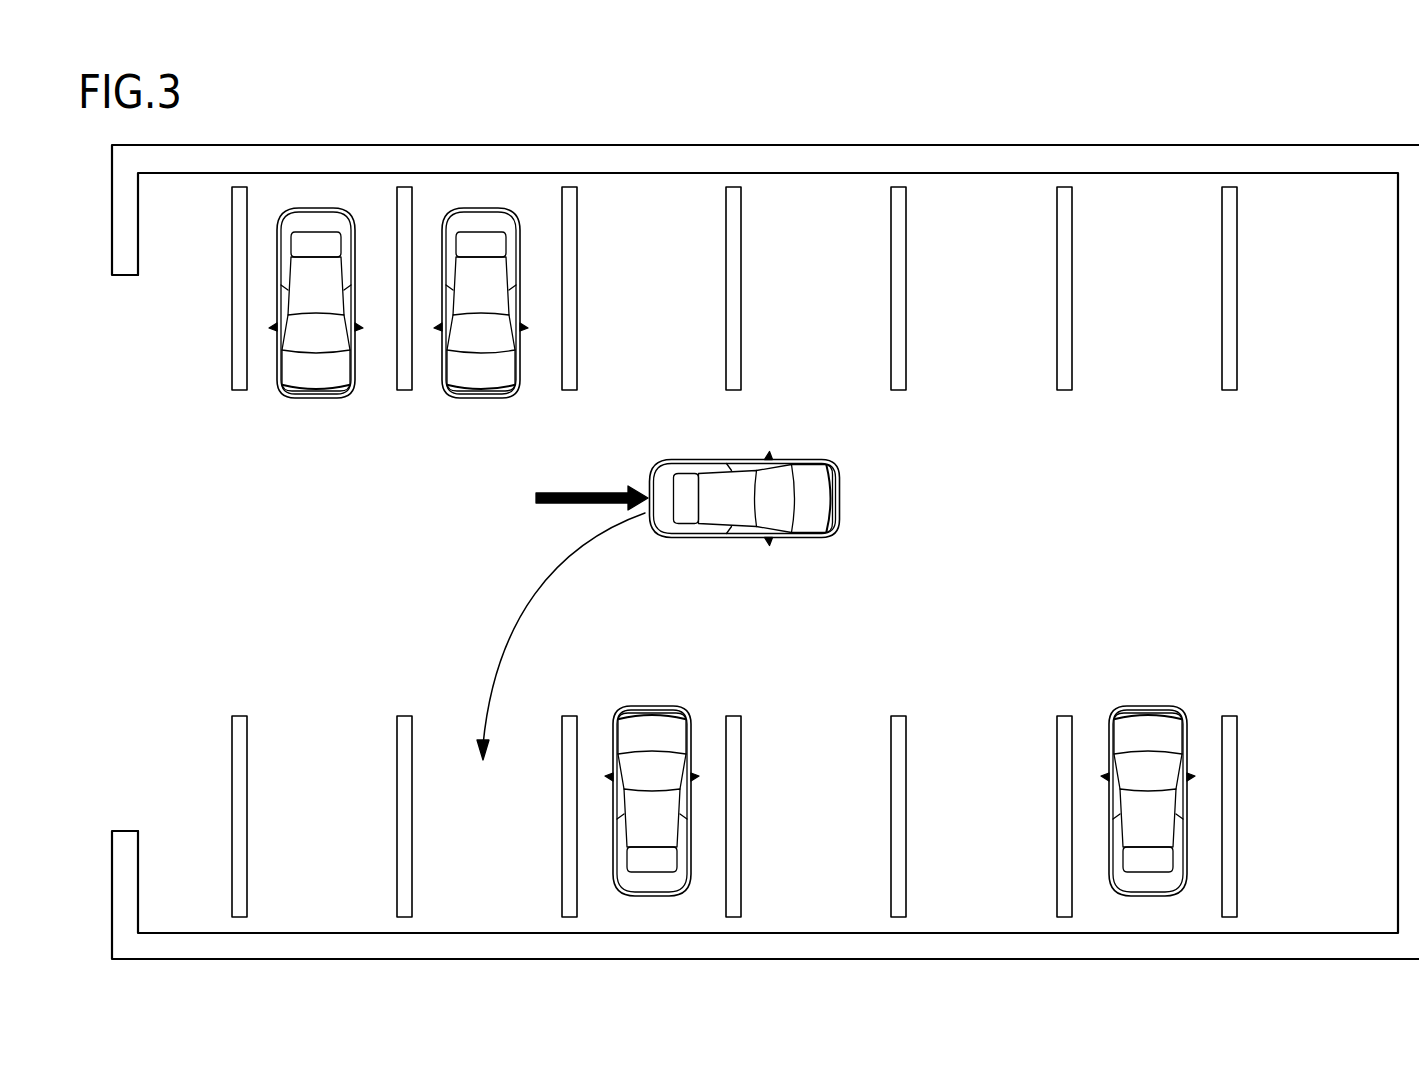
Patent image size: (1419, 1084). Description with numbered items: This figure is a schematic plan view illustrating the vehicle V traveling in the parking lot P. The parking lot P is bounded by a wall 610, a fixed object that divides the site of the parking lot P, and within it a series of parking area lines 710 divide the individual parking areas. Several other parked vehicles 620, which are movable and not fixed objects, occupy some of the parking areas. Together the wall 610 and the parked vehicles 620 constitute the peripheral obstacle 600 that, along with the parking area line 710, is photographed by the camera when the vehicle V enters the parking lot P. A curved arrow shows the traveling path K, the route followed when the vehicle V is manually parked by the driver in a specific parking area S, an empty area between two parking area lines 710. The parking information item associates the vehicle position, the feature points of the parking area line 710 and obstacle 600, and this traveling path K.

The peripheral obstacle 600 is at (831, 43).
The wall 610 is at (646, 157).
The parked vehicle 620 is at (316, 400).
The parking area line 710 is at (232, 362).
The parking lot P is at (1256, 134).
The vehicle V is at (798, 460).
The traveling path K is at (528, 580).
The specific parking area S is at (442, 735).